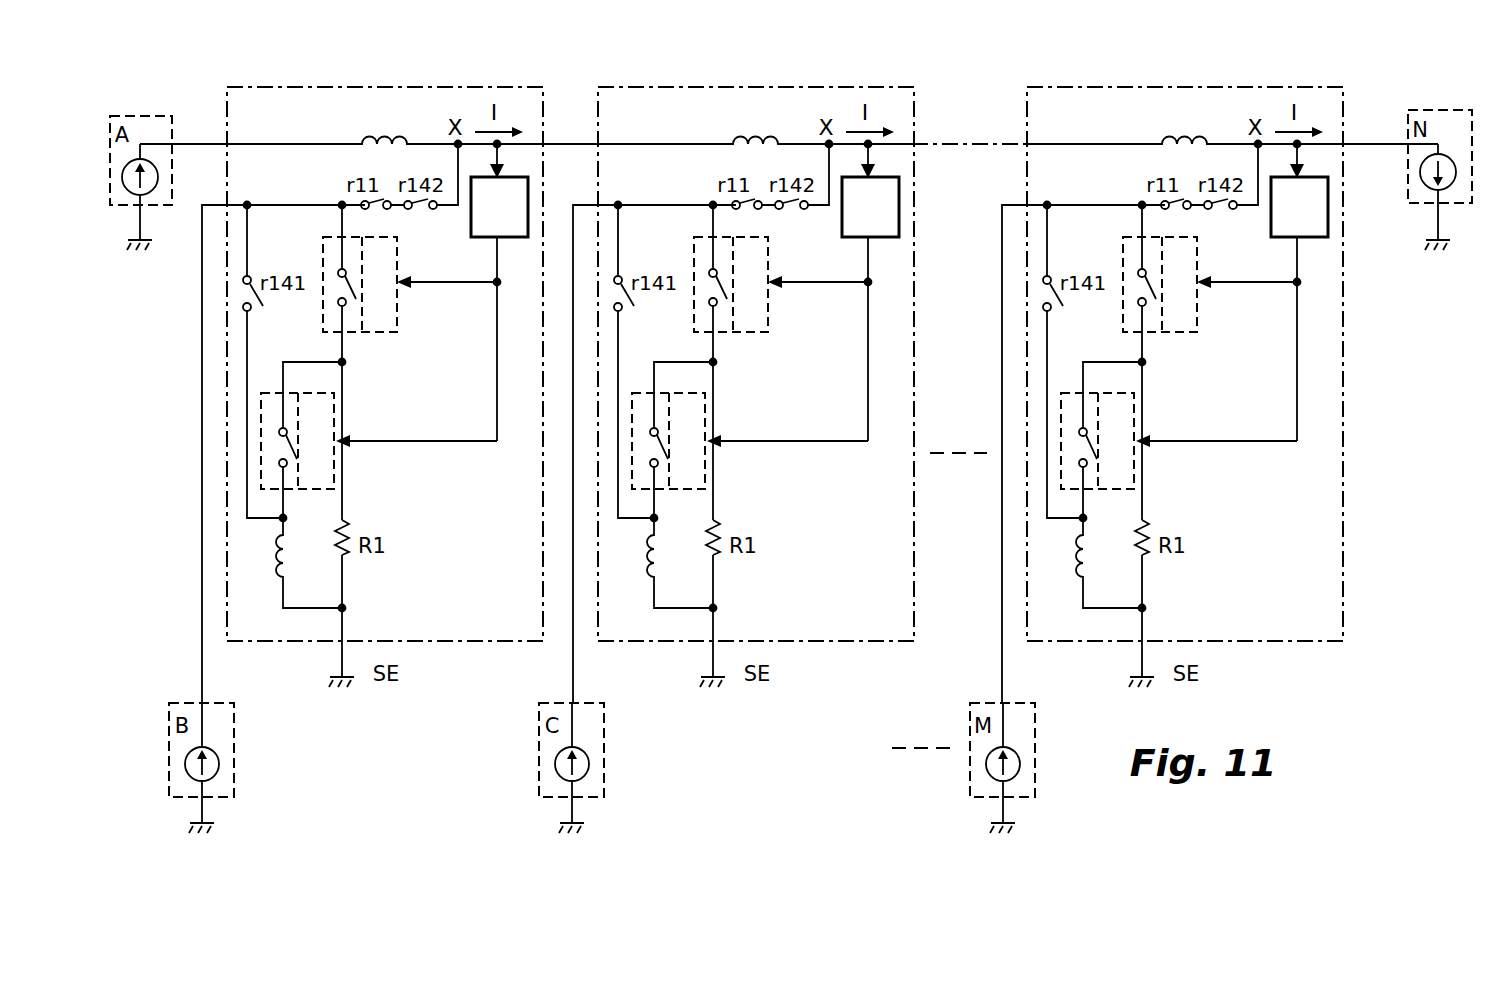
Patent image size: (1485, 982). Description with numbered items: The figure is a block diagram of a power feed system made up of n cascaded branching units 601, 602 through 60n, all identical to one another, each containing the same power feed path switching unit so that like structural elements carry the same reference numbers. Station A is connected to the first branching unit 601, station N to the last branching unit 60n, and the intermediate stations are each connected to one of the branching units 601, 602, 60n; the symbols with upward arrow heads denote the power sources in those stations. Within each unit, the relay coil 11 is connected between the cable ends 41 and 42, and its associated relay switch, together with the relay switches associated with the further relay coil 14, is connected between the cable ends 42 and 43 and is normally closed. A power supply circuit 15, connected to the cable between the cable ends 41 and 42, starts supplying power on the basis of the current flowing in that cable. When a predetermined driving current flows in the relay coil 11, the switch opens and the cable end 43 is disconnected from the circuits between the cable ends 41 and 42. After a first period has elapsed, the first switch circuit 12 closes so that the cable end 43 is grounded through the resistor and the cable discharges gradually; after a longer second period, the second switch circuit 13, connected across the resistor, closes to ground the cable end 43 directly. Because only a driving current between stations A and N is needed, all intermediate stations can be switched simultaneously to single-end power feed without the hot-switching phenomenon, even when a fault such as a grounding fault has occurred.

The cable end 41 is at (227, 144).
The cable end 42 is at (548, 145).
The cable end 43 is at (227, 205).
The relay coil RL11 11 is at (785, 126).
The first switch circuit 12 is at (398, 246).
The second switch circuit 13 is at (326, 490).
The relay coil RL14 14 is at (689, 563).
The power supply circuit 15 is at (484, 237).
The branching unit 601 is at (470, 87).
The branching unit 602 is at (843, 87).
The branching unit 60n is at (1278, 87).